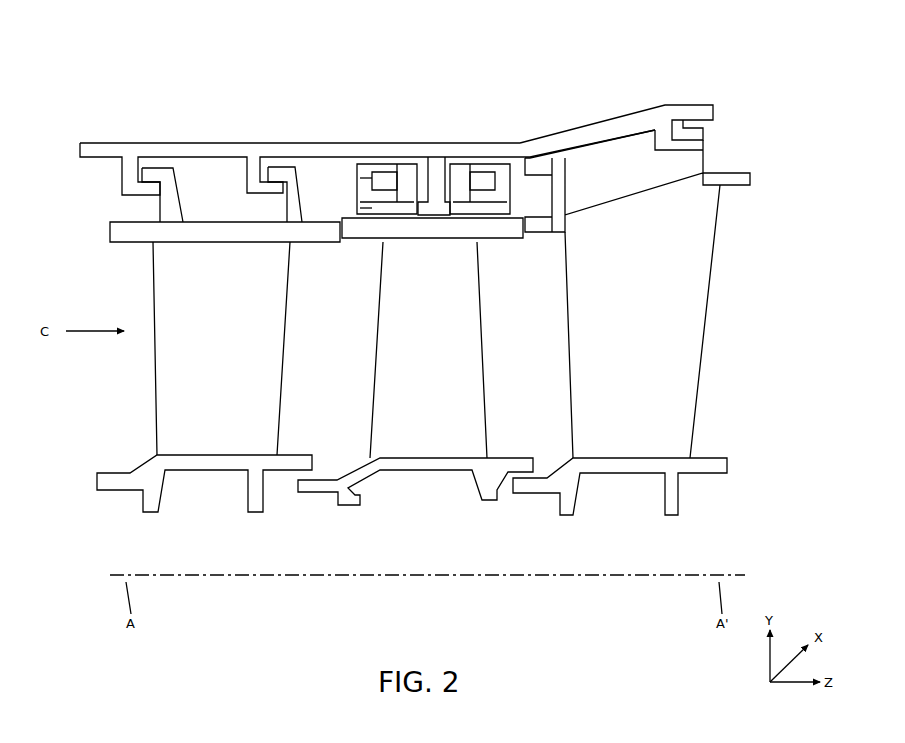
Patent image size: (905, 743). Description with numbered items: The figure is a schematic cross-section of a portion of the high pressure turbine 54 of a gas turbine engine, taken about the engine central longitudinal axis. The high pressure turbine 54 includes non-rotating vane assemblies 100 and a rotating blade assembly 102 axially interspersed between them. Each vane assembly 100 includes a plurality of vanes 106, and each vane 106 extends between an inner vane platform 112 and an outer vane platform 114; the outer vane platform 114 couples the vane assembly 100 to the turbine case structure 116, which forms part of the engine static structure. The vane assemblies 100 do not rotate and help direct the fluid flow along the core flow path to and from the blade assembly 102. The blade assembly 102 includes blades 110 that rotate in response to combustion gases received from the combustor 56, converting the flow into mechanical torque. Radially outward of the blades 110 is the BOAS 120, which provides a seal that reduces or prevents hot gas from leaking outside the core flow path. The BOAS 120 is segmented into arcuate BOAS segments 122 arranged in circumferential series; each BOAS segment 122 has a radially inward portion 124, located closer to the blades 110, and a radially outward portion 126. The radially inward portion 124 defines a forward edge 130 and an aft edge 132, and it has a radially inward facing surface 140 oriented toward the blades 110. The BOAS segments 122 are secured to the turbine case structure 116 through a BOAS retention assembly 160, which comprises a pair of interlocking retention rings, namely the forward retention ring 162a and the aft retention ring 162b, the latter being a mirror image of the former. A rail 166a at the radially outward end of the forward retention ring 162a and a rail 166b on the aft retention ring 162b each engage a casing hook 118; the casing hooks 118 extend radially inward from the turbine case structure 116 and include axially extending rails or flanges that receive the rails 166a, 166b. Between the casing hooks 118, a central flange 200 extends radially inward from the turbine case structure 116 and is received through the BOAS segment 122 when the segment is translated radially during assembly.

The high pressure turbine 54 is at (205, 87).
The combustor 56 is at (14, 386).
The vane assembly 100 is at (125, 271).
The blade assembly 102 is at (362, 355).
The vane 106 is at (222, 356).
The blade 110 is at (430, 361).
The inner vane platform 112 is at (292, 462).
The outer vane platform 114 is at (224, 230).
The turbine case structure 116 is at (278, 150).
The casing hook 118 is at (396, 165).
The BOAS 120 is at (486, 240).
The BOAS segment 122 is at (332, 163).
The radially inward portion 124 is at (362, 228).
The radially outward portion 126 is at (380, 192).
The forward edge 130 is at (335, 228).
The aft edge 132 is at (522, 237).
The radially inward facing surface 140 is at (372, 243).
The BOAS retention assembly 160 is at (460, 272).
The forward retention ring 162a is at (390, 204).
The aft retention ring 162b is at (467, 204).
The rail 166a is at (384, 172).
The rail 166b is at (488, 170).
The central flange 200 is at (435, 170).